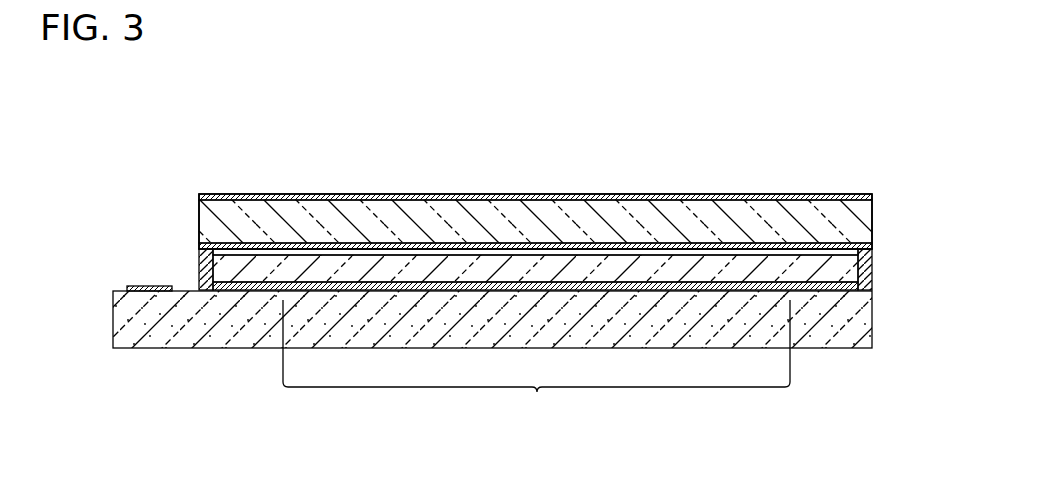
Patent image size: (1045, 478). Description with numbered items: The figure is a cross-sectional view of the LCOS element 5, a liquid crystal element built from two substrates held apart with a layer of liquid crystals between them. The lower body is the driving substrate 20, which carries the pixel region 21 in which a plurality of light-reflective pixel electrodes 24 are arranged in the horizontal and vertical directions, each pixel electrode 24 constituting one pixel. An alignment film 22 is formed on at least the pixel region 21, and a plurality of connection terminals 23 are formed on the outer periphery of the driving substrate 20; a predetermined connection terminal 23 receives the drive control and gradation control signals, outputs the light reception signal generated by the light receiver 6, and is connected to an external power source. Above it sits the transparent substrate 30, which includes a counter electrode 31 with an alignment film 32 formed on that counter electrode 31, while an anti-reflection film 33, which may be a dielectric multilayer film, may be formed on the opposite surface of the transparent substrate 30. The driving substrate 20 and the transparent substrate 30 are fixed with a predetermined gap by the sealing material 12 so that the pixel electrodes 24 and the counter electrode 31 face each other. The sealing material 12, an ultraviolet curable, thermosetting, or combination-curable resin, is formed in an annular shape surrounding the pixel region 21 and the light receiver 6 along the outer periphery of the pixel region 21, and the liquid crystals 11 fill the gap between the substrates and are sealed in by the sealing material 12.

The LCOS element 5 is at (689, 183).
The light receiver 6 is at (243, 300).
The liquid crystals 11 is at (284, 263).
The sealing material 12 is at (199, 268).
The driving substrate 20 is at (113, 322).
The pixel region 21 is at (536, 364).
The alignment film 22 is at (874, 288).
The connection terminals 23 is at (140, 287).
The pixel electrodes 24 is at (357, 297).
The transparent substrate 30 is at (199, 228).
The counter electrode 31 is at (441, 222).
The alignment film 32 is at (874, 252).
The anti-reflection film 33 is at (874, 198).